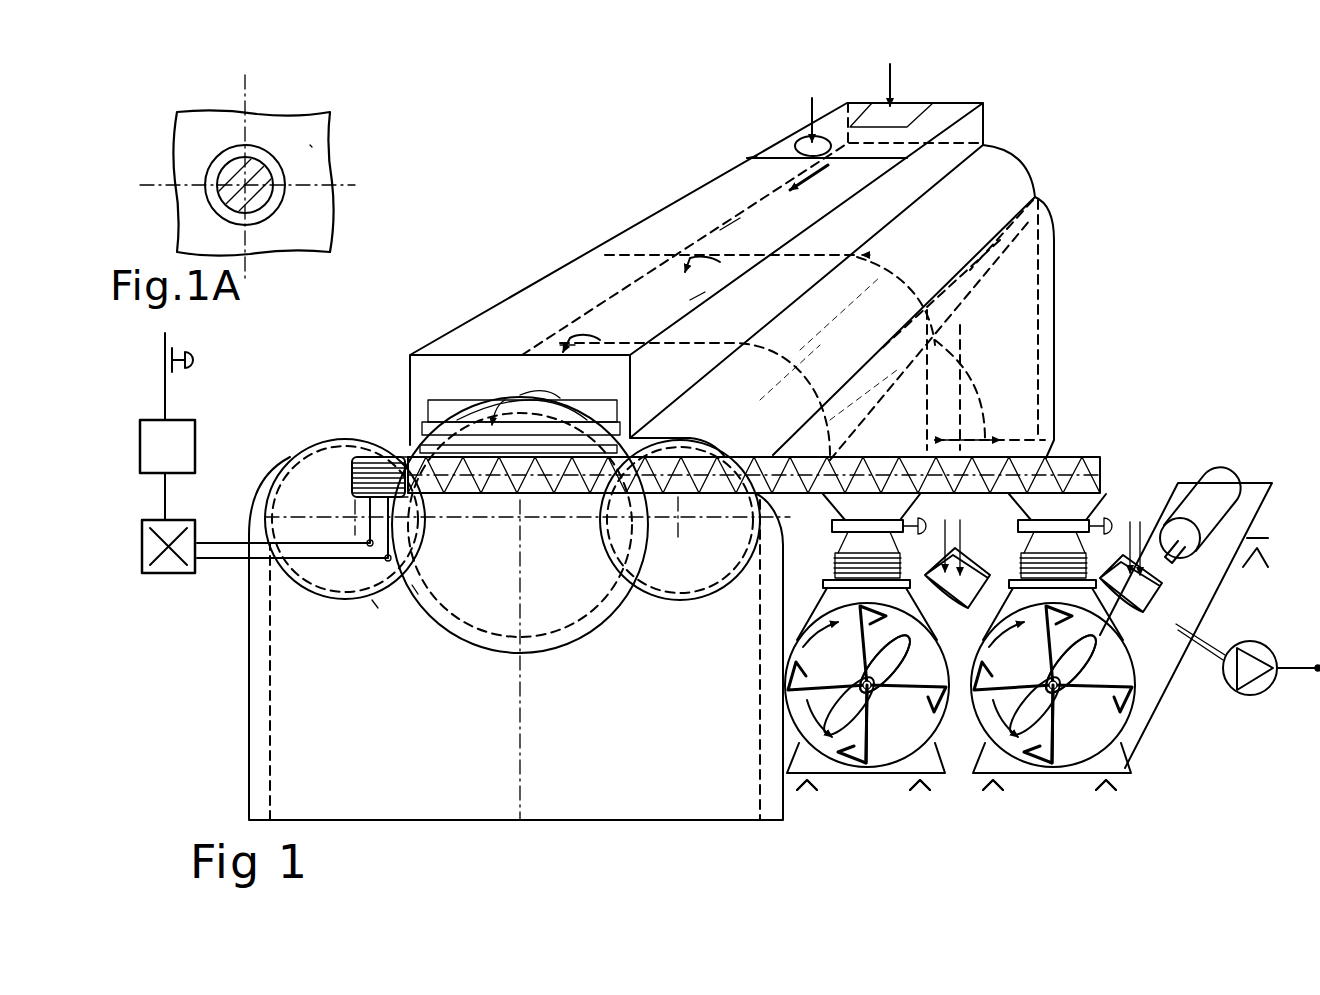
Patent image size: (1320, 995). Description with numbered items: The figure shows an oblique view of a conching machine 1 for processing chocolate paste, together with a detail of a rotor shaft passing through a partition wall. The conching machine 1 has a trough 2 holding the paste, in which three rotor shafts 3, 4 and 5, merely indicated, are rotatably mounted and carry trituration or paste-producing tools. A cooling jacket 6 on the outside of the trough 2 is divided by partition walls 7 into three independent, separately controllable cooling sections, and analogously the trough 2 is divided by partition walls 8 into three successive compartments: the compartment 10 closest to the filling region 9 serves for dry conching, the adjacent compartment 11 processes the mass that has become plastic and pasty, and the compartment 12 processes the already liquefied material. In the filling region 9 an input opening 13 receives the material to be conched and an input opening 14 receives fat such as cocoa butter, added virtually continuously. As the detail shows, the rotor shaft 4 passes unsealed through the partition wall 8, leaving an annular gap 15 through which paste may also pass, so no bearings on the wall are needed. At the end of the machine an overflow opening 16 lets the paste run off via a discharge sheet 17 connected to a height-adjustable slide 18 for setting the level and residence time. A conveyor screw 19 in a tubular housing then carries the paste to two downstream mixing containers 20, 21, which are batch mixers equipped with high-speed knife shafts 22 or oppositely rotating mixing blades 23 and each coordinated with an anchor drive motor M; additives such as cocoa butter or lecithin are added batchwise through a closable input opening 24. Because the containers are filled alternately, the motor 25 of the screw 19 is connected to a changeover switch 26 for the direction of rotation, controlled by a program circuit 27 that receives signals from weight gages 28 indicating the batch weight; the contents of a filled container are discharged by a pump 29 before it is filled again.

In FIG. 1, the conching machine 1 is at (628, 130).
In FIG. 1, the trough 2 is at (412, 586).
In FIG. 1, the rotor shaft 3 is at (350, 515).
In FIG. 1A, the rotor shaft 4 is at (262, 165).
In FIG. 1, the rotor shaft 4 is at (522, 527).
In FIG. 1, the rotor shaft 5 is at (685, 522).
In FIG. 1, the cooling jacket 6 is at (282, 733).
In FIG. 1, the partition walls 7 is at (958, 373).
In FIG. 1A, the partition walls 8 is at (308, 145).
In FIG. 1, the partition walls 8 is at (885, 256).
In FIG. 1, the filling region 9 is at (747, 157).
In FIG. 1, the compartment 10 is at (752, 220).
In FIG. 1, the compartment 11 is at (703, 300).
In FIG. 1, the compartment 12 is at (572, 345).
In FIG. 1, the input opening 13 is at (895, 68).
In FIG. 1, the input opening 14 is at (814, 100).
In FIG. 1A, the annular gap 15 is at (224, 158).
In FIG. 1, the overflow opening 16 is at (438, 400).
In FIG. 1, the discharge sheet 17 is at (418, 446).
In FIG. 1, the slide 18 is at (420, 415).
In FIG. 1, the conveyor screw 19 is at (485, 495).
In FIG. 1, the mixing container 20 is at (880, 840).
In FIG. 1, the mixing container 21 is at (1065, 840).
In FIG. 1, the knife shafts 22 is at (866, 770).
In FIG. 1, the mixing blades 23 is at (900, 650).
In FIG. 1, the input opening 24 is at (955, 560).
In FIG. 1, the motor 25 is at (358, 462).
In FIG. 1, the changeover switch 26 is at (158, 575).
In FIG. 1, the program circuit 27 is at (167, 426).
In FIG. 1, the weight gages 28 is at (200, 443).
In FIG. 1, the pump 29 is at (1235, 693).
In FIG. 1, the anchor drive motor M is at (1224, 480).